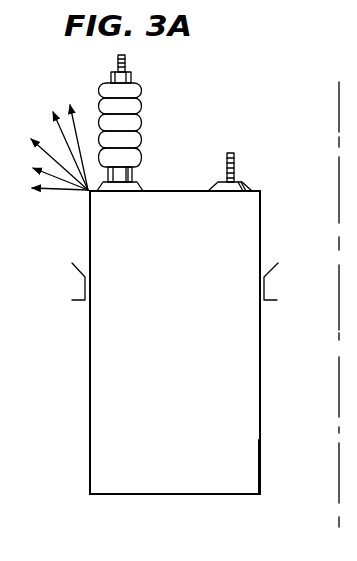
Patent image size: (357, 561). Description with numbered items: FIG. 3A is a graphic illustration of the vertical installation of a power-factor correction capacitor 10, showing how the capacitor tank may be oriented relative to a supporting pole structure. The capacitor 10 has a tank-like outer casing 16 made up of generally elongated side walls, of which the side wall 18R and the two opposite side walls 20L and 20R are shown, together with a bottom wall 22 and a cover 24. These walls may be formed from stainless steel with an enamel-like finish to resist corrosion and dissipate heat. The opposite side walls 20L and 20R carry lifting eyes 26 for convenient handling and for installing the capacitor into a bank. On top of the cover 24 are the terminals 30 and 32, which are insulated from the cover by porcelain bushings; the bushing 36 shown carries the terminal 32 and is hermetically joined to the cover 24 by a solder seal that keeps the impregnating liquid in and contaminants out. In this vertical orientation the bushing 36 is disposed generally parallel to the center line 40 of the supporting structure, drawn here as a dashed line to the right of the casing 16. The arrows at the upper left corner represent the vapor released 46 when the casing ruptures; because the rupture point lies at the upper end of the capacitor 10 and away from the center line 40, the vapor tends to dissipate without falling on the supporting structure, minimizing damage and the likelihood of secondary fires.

The power-factor correction capacitor 10 is at (81, 509).
The outer casing 16 is at (259, 494).
The side wall 18R is at (187, 317).
The side wall 20L is at (90, 406).
The side wall 20R is at (260, 410).
The bottom wall 22 is at (190, 494).
The cover 24 is at (164, 191).
The lifting eyes 26 is at (76, 300).
The terminal 30 is at (234, 157).
The terminal 32 is at (126, 59).
The bushing 36 is at (136, 127).
The center line 40 is at (339, 183).
The vapor released 46 is at (56, 147).